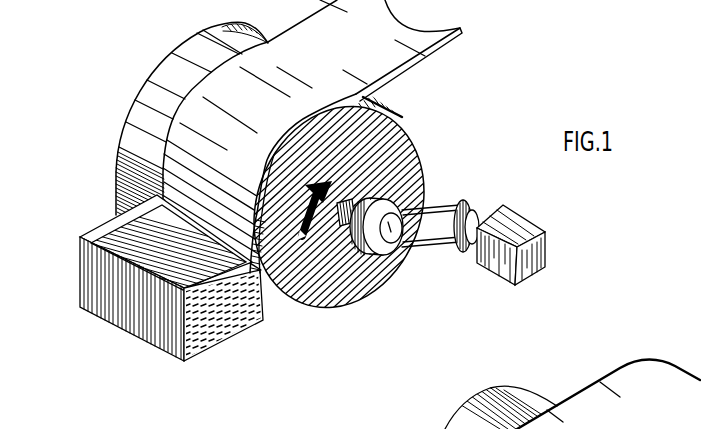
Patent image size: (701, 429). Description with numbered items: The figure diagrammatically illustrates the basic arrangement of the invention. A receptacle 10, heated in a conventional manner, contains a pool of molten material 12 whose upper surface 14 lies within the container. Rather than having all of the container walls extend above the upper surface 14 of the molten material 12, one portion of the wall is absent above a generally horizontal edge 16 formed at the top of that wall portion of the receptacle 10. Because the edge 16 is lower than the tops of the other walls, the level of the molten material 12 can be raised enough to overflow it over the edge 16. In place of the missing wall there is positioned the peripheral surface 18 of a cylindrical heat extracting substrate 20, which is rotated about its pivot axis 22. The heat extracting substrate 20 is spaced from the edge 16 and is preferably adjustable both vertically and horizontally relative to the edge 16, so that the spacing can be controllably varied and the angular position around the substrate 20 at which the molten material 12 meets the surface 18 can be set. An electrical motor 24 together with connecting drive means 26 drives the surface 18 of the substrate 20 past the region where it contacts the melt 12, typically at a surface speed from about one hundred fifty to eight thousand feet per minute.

The receptacle 10 is at (137, 302).
The molten material 12 is at (208, 323).
The upper surface 14 is at (172, 250).
The edge 16 is at (243, 330).
The peripheral surface 18 is at (306, 306).
The heat extracting substrate 20 is at (331, 290).
The pivot axis 22 is at (421, 172).
The electrical motor 24 is at (542, 223).
The connecting drive means 26 is at (440, 247).